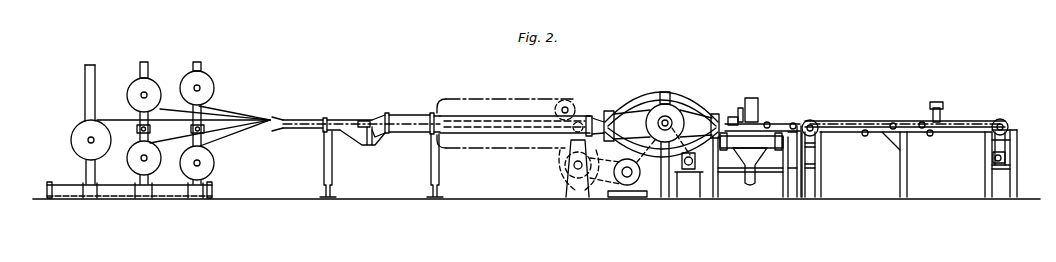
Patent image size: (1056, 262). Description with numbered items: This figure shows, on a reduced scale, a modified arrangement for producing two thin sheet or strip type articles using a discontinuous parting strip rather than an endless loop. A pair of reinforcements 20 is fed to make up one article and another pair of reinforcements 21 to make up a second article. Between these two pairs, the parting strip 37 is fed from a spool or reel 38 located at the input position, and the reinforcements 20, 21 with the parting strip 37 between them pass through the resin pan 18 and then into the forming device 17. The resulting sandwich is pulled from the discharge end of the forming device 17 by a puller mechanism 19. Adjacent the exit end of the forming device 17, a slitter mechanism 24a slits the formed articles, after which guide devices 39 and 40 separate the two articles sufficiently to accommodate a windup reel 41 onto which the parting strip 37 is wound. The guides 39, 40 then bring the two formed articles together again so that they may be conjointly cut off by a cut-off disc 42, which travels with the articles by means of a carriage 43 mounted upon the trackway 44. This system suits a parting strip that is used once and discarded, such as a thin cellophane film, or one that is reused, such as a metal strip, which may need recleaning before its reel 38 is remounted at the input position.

The forming device 17 is at (338, 118).
The resin pan 18 is at (300, 130).
The puller mechanism 19 is at (485, 97).
The pair of reinforcements 20 is at (222, 107).
The pair of reinforcements 21 is at (212, 136).
The slitter mechanism 24a is at (368, 119).
The parting strip 37 is at (110, 117).
The spool or reel 38 is at (80, 132).
The guide device 39 is at (638, 100).
The guide device 40 is at (628, 149).
The windup reel 41 is at (678, 117).
The cut-off disc 42 is at (738, 96).
The carriage 43 is at (746, 142).
The trackway 44 is at (786, 108).